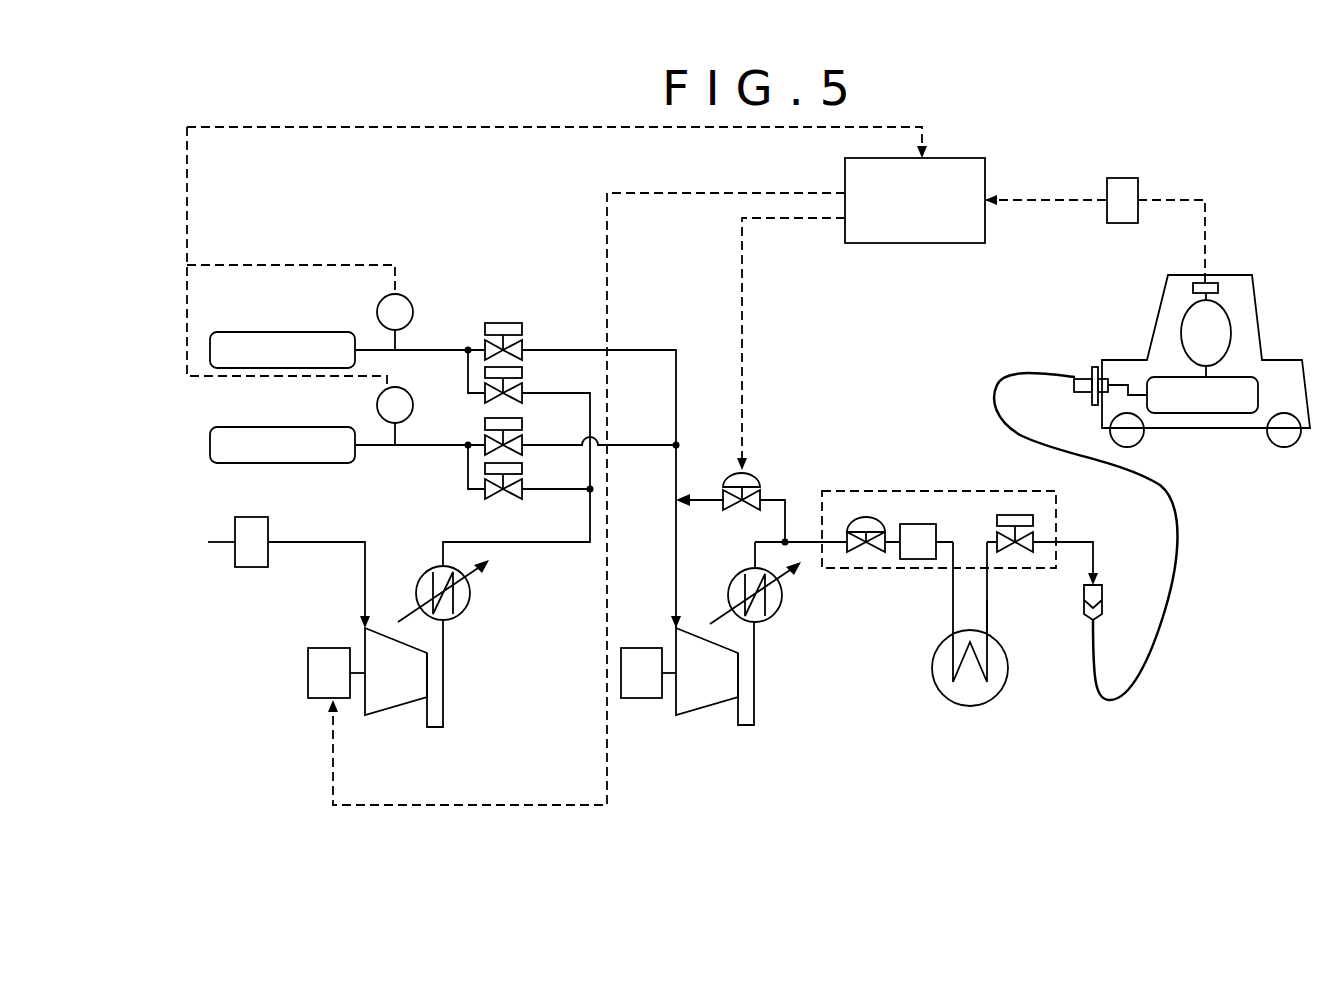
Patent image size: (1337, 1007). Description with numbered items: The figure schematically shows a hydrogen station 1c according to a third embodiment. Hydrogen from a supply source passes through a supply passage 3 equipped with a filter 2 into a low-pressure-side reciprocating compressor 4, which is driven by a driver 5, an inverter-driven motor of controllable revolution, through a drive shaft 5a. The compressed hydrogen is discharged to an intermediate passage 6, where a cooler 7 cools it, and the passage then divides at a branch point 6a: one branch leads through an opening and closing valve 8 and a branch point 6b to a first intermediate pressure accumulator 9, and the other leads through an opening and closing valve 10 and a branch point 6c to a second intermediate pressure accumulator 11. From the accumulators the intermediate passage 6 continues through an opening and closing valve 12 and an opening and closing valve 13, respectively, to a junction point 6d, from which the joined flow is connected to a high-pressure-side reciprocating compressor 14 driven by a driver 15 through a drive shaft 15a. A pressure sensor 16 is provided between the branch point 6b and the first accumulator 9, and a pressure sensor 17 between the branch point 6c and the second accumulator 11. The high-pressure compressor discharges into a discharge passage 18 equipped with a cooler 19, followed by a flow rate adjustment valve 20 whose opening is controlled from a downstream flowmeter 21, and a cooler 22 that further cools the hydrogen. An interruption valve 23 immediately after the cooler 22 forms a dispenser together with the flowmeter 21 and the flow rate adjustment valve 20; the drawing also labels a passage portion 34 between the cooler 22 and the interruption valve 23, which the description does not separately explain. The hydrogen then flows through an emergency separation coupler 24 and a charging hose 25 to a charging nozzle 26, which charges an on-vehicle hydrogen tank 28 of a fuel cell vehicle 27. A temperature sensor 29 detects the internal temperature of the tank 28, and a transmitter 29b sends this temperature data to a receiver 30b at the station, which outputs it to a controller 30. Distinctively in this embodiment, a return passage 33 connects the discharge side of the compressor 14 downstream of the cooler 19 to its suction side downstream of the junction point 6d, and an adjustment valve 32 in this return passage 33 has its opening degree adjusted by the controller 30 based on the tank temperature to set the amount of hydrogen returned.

The hydrogen station 1c is at (335, 228).
The filter 2 is at (253, 568).
The supply passage 3 is at (295, 545).
The low-pressure-side reciprocating compressor 4 is at (392, 712).
The driver 5 is at (318, 700).
The drive shaft 5a is at (361, 672).
The intermediate passage 6 is at (445, 728).
The branch point 6a is at (592, 490).
The branch point 6b is at (466, 445).
The branch point 6c is at (466, 350).
The junction point 6d is at (679, 445).
The cooler 7 is at (465, 617).
The opening and closing valve 8 is at (486, 496).
The first intermediate pressure accumulator 9 is at (272, 465).
The opening and closing valve 10 is at (524, 366).
The second intermediate pressure accumulator 11 is at (265, 370).
The opening and closing valve 12 is at (524, 418).
The opening and closing valve 13 is at (524, 322).
The high-pressure-side reciprocating compressor 14 is at (697, 712).
The driver 15 is at (641, 705).
The drive shaft 15a is at (673, 672).
The pressure sensor 16 is at (376, 403).
The pressure sensor 17 is at (376, 302).
The discharge passage 18 is at (758, 727).
The cooler 19 is at (776, 617).
The flow rate adjustment valve 20 is at (866, 517).
The flowmeter 21 is at (916, 524).
The cooler 22 is at (952, 705).
The interruption valve 23 is at (1007, 515).
The emergency separation coupler 24 is at (1101, 585).
The charging hose 25 is at (1090, 695).
The charging nozzle 26 is at (1082, 378).
The fuel cell vehicle 27 is at (1224, 276).
The on-vehicle hydrogen tank 28 is at (1225, 415).
The temperature sensor 29 is at (1186, 312).
The transmitter 29b is at (1218, 288).
The controller 30 is at (985, 158).
The receiver 30b is at (1122, 178).
The adjustment valve 32 is at (745, 476).
The return passage 33 is at (786, 503).
The dispenser pipe 34 is at (990, 620).